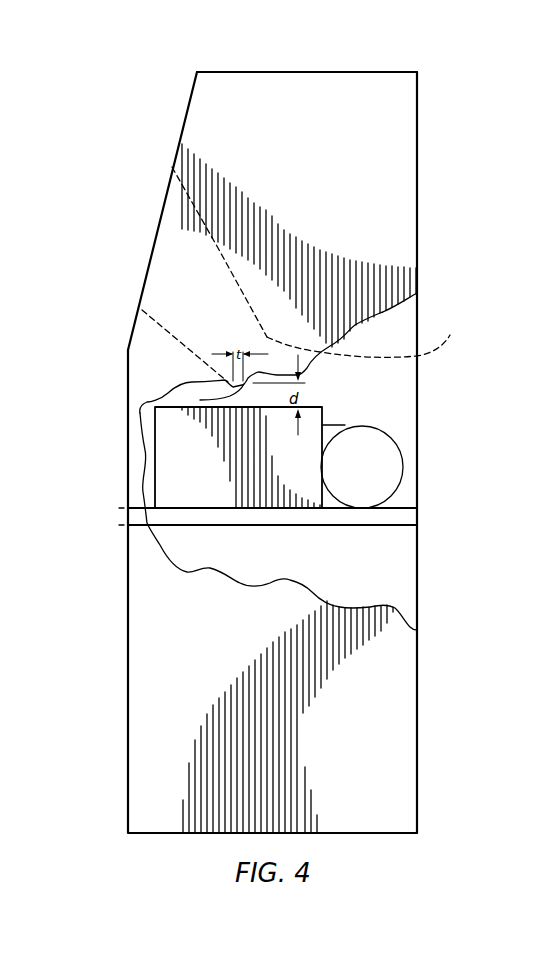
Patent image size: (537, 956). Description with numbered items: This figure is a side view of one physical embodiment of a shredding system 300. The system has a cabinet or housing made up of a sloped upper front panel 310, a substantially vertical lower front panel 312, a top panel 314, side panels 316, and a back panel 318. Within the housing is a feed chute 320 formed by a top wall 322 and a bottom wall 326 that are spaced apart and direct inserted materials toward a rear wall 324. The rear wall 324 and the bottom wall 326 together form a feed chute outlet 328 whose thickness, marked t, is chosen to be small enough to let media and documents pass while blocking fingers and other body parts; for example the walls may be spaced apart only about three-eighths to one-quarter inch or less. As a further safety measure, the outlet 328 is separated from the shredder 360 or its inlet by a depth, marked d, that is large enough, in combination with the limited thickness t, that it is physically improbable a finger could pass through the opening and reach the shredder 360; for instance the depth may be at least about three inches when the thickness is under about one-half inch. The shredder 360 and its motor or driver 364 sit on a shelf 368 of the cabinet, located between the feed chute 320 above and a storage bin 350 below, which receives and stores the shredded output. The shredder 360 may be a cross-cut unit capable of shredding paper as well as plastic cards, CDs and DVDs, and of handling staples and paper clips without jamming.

The shredding system 300 is at (130, 122).
The sloped upper front panel 310 is at (188, 108).
The lower front panel 312 is at (126, 440).
The top panel 314 is at (305, 72).
The side panel 316 is at (398, 177).
The back panel 318 is at (417, 238).
The feed chute 320 is at (148, 251).
The top wall 322 is at (218, 249).
The rear wall 324 is at (362, 337).
The bottom wall 326 is at (163, 323).
The feed chute outlet 328 is at (200, 400).
The storage bin 350 is at (402, 694).
The shredder 360 is at (314, 407).
The motor 364 is at (382, 433).
The shelf 368 is at (408, 508).